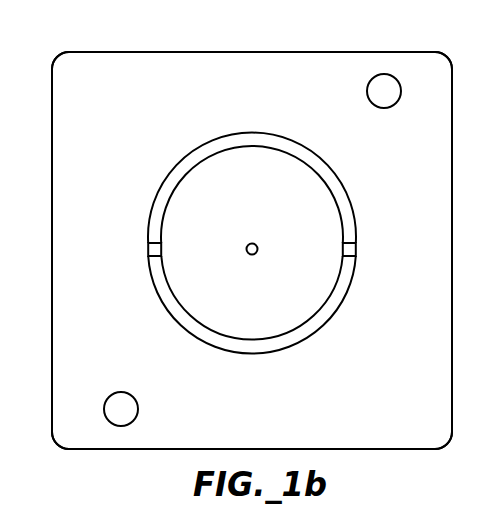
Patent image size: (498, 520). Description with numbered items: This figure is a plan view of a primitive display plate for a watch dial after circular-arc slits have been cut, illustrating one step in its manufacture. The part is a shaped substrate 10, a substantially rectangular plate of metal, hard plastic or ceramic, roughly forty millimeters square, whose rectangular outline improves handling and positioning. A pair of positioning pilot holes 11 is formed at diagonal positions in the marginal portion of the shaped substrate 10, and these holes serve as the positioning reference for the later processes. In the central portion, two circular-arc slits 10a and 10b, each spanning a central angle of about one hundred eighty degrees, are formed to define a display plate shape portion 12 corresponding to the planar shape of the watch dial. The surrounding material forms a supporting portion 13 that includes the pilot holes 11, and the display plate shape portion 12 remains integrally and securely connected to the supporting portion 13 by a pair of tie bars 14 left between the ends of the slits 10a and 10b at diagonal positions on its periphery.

The shaped substrate 10 is at (284, 52).
The circular-arc slit 10a is at (205, 153).
The circular-arc slit 10b is at (288, 350).
The positioning pilot hole 11 is at (122, 427).
The display plate shape portion 12 is at (255, 195).
The supporting portion 13 is at (140, 68).
The tie bar 14 is at (150, 258).